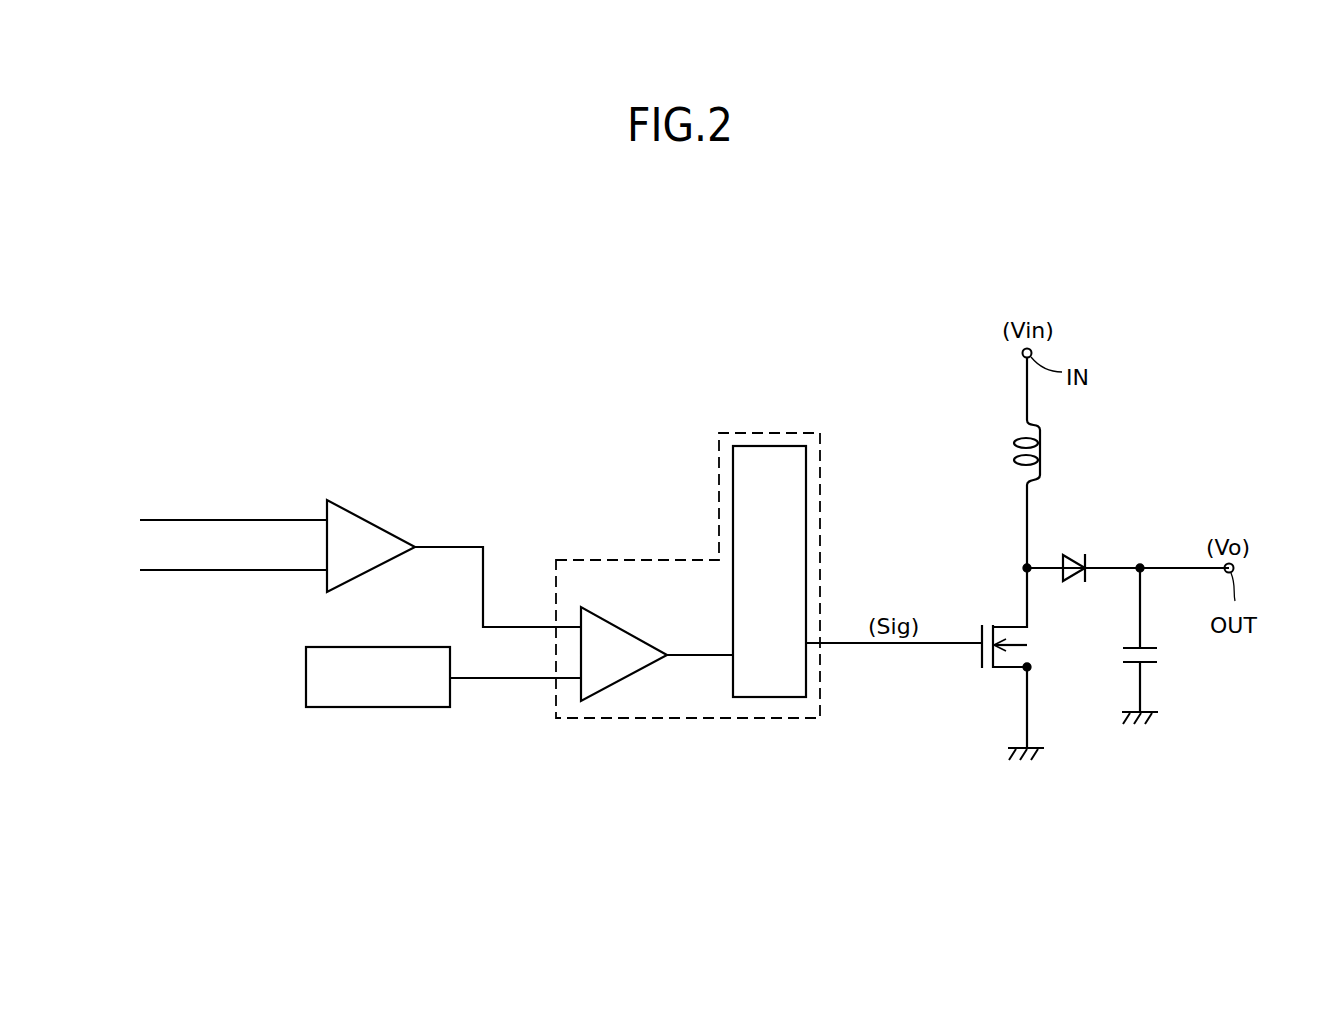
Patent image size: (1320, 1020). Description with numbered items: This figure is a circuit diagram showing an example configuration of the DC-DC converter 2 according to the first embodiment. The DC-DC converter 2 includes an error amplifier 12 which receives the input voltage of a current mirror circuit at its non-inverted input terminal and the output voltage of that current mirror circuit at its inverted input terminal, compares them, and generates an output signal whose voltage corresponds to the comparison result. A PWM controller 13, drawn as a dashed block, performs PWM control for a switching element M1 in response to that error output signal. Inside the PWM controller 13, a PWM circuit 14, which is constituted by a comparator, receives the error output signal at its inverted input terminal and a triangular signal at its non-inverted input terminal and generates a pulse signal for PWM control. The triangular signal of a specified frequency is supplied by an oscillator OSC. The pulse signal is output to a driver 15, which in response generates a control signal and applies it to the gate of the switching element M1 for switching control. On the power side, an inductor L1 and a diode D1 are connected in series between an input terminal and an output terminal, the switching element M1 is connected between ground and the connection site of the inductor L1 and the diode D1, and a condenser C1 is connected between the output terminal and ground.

The DC-DC converter 2 is at (633, 423).
The error amplifier 12 is at (365, 572).
The PWM controller 13 is at (821, 556).
The PWM circuit 14 is at (637, 688).
The driver 15 is at (780, 446).
The oscillator OSC is at (352, 707).
The inductor L1 is at (1045, 452).
The diode D1 is at (1070, 582).
The condenser C1 is at (1124, 640).
The switching element M1 is at (1002, 658).